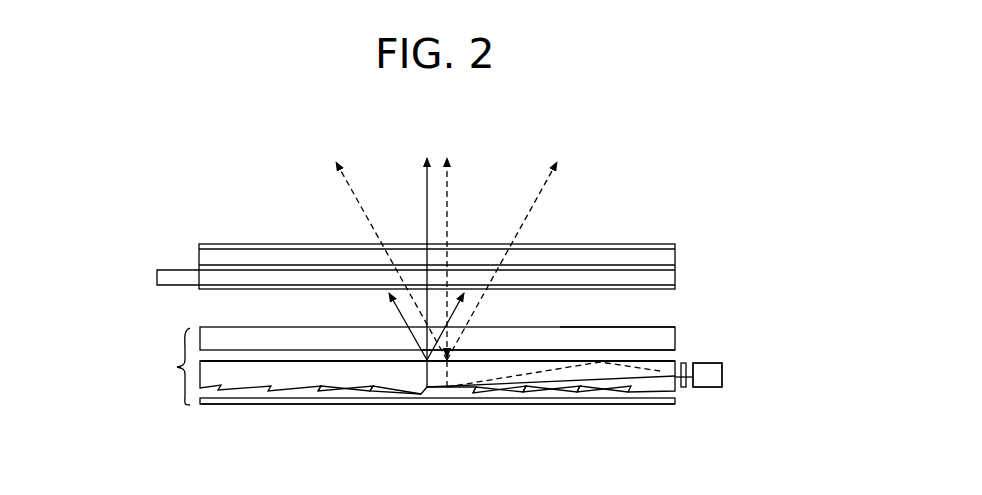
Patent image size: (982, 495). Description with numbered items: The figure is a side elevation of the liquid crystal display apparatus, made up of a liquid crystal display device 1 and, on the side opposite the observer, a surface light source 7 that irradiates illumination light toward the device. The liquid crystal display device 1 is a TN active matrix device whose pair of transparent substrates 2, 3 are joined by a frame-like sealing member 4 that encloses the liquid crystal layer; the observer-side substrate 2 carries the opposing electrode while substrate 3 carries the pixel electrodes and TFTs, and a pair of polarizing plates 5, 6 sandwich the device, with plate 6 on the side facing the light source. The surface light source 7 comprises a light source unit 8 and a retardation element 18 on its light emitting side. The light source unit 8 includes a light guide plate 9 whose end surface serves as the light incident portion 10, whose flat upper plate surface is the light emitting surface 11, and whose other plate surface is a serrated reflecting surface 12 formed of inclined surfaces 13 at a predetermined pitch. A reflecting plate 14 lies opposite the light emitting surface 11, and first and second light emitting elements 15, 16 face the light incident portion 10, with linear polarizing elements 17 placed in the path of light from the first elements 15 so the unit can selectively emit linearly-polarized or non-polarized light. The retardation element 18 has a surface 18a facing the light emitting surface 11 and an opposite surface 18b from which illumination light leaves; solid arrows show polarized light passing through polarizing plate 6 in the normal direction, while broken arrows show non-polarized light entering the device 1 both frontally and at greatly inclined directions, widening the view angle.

The liquid crystal display device 1 is at (646, 241).
The transparent substrate 2 is at (668, 257).
The transparent substrate 3 is at (668, 278).
The sealing member 4 is at (289, 263).
The polarizing plate 5 is at (228, 244).
The polarizing plate 6 is at (209, 291).
The surface light source 7 is at (173, 366).
The light source unit 8 is at (247, 411).
The light guide member 9 is at (240, 378).
The light incident portion 10 is at (677, 380).
The light emitting surface 11 is at (285, 360).
The reflecting surface 12 is at (540, 397).
The inclined surfaces 13 is at (390, 392).
The reflecting plate 14 is at (307, 406).
The first light emitting elements 15 is at (708, 384).
The second light emitting elements 16 is at (707, 375).
The linear polarizing elements 17 is at (684, 389).
The retardation element 18 is at (670, 340).
The surface 18a is at (533, 352).
The opposite surface 18b is at (602, 326).